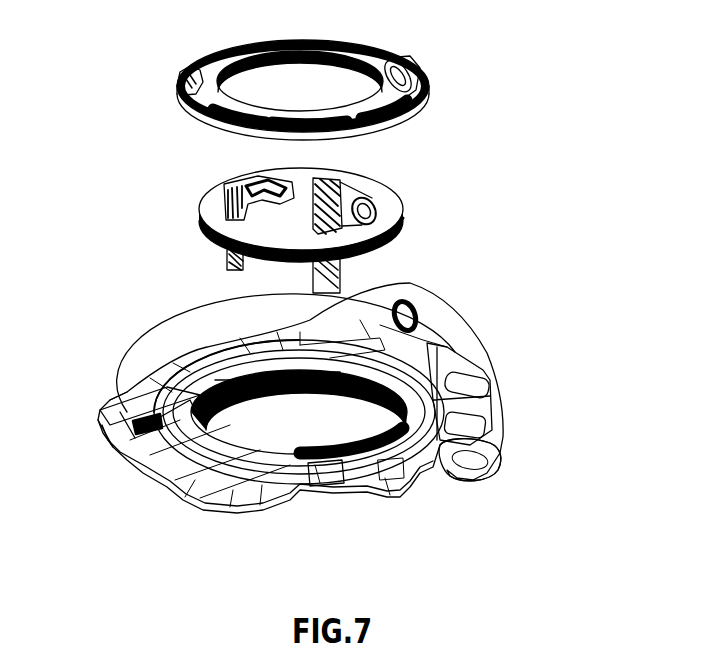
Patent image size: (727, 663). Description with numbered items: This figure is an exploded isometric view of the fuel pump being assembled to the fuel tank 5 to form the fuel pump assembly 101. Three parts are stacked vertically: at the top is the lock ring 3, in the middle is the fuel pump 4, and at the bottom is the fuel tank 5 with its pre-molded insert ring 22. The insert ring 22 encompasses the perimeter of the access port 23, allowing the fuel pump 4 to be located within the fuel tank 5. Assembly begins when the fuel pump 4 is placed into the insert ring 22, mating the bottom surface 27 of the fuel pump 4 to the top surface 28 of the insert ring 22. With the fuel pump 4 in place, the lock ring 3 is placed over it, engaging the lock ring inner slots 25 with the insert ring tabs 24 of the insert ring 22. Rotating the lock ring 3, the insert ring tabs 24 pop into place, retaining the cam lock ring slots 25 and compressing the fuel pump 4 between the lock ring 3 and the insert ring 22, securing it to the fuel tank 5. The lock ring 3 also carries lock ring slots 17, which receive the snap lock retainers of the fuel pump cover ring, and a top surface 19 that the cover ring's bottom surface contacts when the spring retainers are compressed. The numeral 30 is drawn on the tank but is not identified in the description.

The lock ring 3 is at (217, 53).
The lock ring inner slots 25 is at (185, 78).
The top surface 19 is at (417, 82).
The lock ring slots 17 is at (365, 127).
The fuel pump assembly 101 is at (487, 103).
The fuel pump 4 is at (200, 222).
The bottom surface 27 is at (403, 238).
The fuel tank 5 is at (172, 363).
The boss rim 30 is at (258, 368).
The top surface 28 is at (418, 392).
The insert ring 22 is at (127, 467).
The insert ring tabs 24 is at (327, 497).
The access port 23 is at (440, 480).